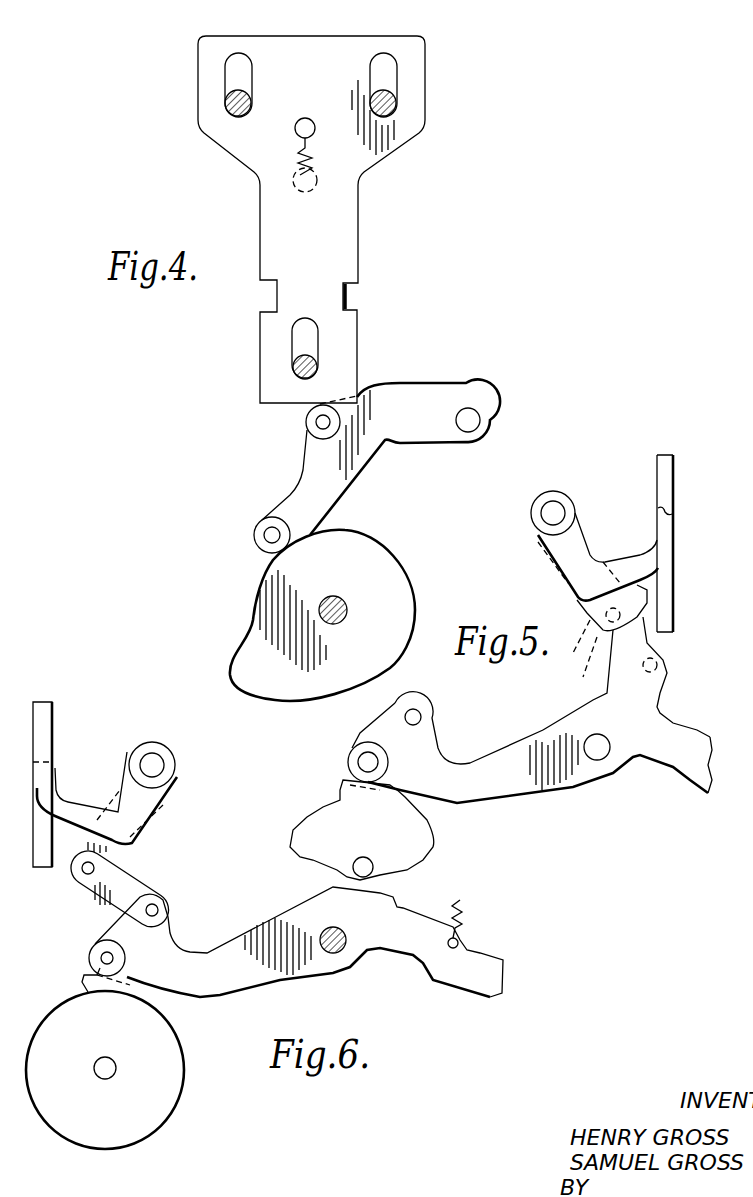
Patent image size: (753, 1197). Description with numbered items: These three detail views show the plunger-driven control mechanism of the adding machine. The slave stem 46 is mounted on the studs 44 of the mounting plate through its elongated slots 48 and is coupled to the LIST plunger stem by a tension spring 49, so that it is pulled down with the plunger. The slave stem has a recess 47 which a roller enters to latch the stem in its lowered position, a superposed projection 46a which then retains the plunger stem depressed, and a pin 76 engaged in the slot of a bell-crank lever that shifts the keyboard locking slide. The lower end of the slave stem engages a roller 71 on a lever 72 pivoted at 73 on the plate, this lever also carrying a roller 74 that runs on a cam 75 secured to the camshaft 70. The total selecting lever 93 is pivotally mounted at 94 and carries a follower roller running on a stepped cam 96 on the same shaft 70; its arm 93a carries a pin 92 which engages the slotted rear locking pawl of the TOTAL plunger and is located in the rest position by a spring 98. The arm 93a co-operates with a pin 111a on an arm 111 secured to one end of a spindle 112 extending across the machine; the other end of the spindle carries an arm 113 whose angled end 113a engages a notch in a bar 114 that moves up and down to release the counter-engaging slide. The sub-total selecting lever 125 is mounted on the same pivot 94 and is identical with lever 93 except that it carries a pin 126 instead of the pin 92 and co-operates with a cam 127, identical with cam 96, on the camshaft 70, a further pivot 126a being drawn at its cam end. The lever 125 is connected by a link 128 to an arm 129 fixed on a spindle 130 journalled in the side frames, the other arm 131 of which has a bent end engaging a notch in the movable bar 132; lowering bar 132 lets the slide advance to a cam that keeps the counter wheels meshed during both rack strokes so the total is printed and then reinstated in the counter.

In FIG. 4, the studs 44 is at (292, 366).
In FIG. 4, the slave stem 46 is at (418, 105).
In FIG. 4, the projection 46a is at (348, 298).
In FIG. 4, the recess 47 is at (258, 282).
In FIG. 4, the elongated slots 48 is at (380, 72).
In FIG. 4, the tension spring 49 is at (312, 153).
In FIG. 4, the shaft 70 is at (340, 598).
In FIG. 5, the shaft 70 is at (364, 857).
In FIG. 6, the shaft 70 is at (116, 1068).
In FIG. 4, the roller 71 is at (308, 430).
In FIG. 4, the lever 72 is at (382, 446).
In FIG. 4, the pivot 73 is at (470, 428).
In FIG. 4, the roller 74 is at (260, 533).
In FIG. 4, the cam 75 is at (337, 678).
In FIG. 4, the pin 76 is at (322, 192).
In FIG. 5, the pin 92 is at (658, 664).
In FIG. 5, the total selecting lever 93 is at (515, 750).
In FIG. 5, the arm 93a is at (643, 703).
In FIG. 5, the pivot 94 is at (600, 760).
In FIG. 6, the pivot 94 is at (340, 953).
In FIG. 5, the stepped cam 96 is at (425, 840).
In FIG. 6, the spring 98 is at (462, 903).
In FIG. 5, the arm 111 is at (592, 615).
In FIG. 5, the pin 111a is at (570, 671).
In FIG. 5, the spindle 112 is at (545, 518).
In FIG. 5, the arm 113 is at (662, 538).
In FIG. 5, the angled end 113a is at (658, 508).
In FIG. 5, the bar 114 is at (662, 476).
In FIG. 6, the sub-total selecting lever 125 is at (222, 978).
In FIG. 6, the pin 126 is at (158, 905).
In FIG. 6, the pivot 126a is at (88, 960).
In FIG. 6, the cam 127 is at (105, 1058).
In FIG. 6, the link 128 is at (103, 902).
In FIG. 6, the arm 129 is at (132, 848).
In FIG. 6, the spindle 130 is at (150, 757).
In FIG. 6, the arm 131 is at (42, 770).
In FIG. 6, the bar 132 is at (52, 717).